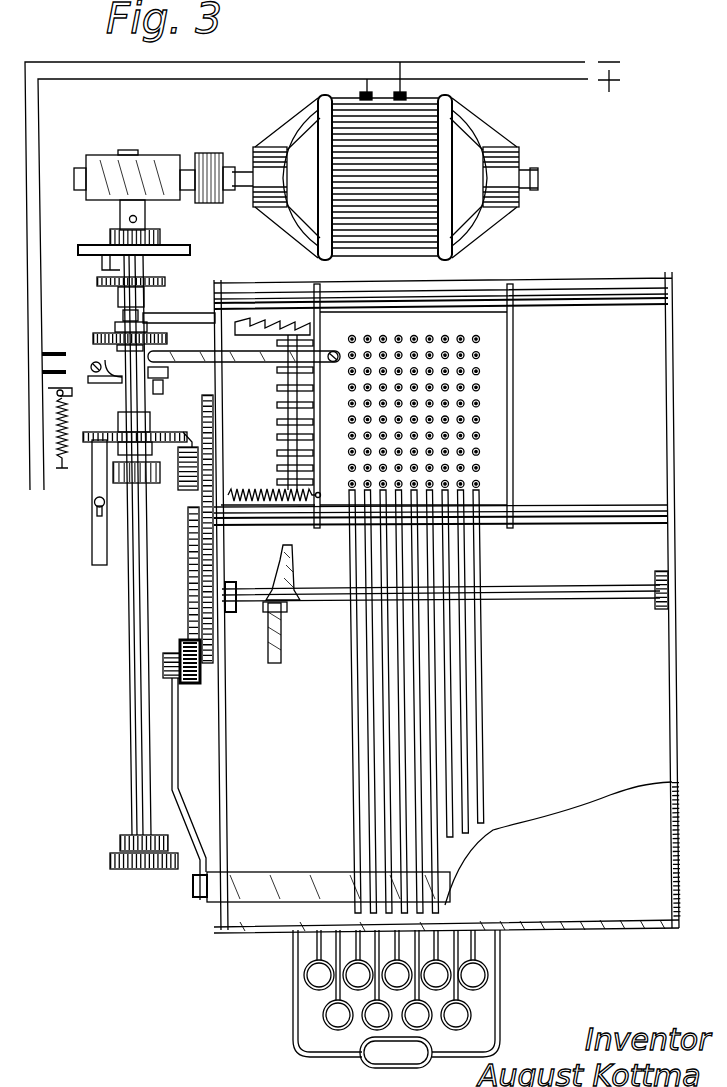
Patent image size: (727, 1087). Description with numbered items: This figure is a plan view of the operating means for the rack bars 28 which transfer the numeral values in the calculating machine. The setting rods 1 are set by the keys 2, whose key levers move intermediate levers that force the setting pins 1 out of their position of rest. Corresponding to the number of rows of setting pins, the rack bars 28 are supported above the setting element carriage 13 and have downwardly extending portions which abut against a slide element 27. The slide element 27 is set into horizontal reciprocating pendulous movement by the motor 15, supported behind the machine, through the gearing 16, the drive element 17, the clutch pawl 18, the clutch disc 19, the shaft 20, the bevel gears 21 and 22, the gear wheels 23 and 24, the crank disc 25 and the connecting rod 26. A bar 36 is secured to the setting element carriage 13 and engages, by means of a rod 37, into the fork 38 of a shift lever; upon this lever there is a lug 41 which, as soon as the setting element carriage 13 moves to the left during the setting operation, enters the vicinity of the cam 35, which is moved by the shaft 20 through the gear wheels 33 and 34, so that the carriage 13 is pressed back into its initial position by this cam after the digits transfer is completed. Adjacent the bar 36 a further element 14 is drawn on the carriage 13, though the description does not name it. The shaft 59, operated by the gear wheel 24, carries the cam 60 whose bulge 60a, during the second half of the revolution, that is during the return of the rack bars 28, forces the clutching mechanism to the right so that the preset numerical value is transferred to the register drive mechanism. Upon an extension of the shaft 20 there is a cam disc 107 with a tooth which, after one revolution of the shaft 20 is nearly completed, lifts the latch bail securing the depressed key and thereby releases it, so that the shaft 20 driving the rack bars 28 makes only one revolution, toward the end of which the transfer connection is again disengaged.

The setting rods 1 is at (478, 403).
The keys 2 is at (330, 1015).
The setting element carriage 13 is at (500, 458).
The ratchet 14 is at (256, 333).
The motor 15 is at (305, 242).
The gearing 16 is at (115, 165).
The drive element 17 is at (148, 208).
The clutch pawl 18 is at (160, 236).
The clutch disc 19 is at (186, 250).
The shaft 20 is at (150, 322).
The bevel gear 21 is at (120, 440).
The bevel gear 22 is at (190, 485).
The gear wheel 23 is at (210, 490).
The gear wheel 24 is at (212, 578).
The crank disc 25 is at (190, 612).
The connecting rod 26 is at (180, 750).
The slide element 27 is at (272, 882).
The rack bars 28 is at (480, 688).
The gear wheel 33 is at (150, 345).
The gear wheel 34 is at (95, 338).
The cam 35 is at (90, 376).
The bar 36 is at (277, 358).
The rod 37 is at (165, 366).
The fork 38 is at (168, 375).
The lug 41 is at (158, 385).
The shaft 59 is at (345, 601).
The cam 60 is at (283, 661).
The bulge 60a is at (292, 568).
The cam disc 107 is at (145, 862).